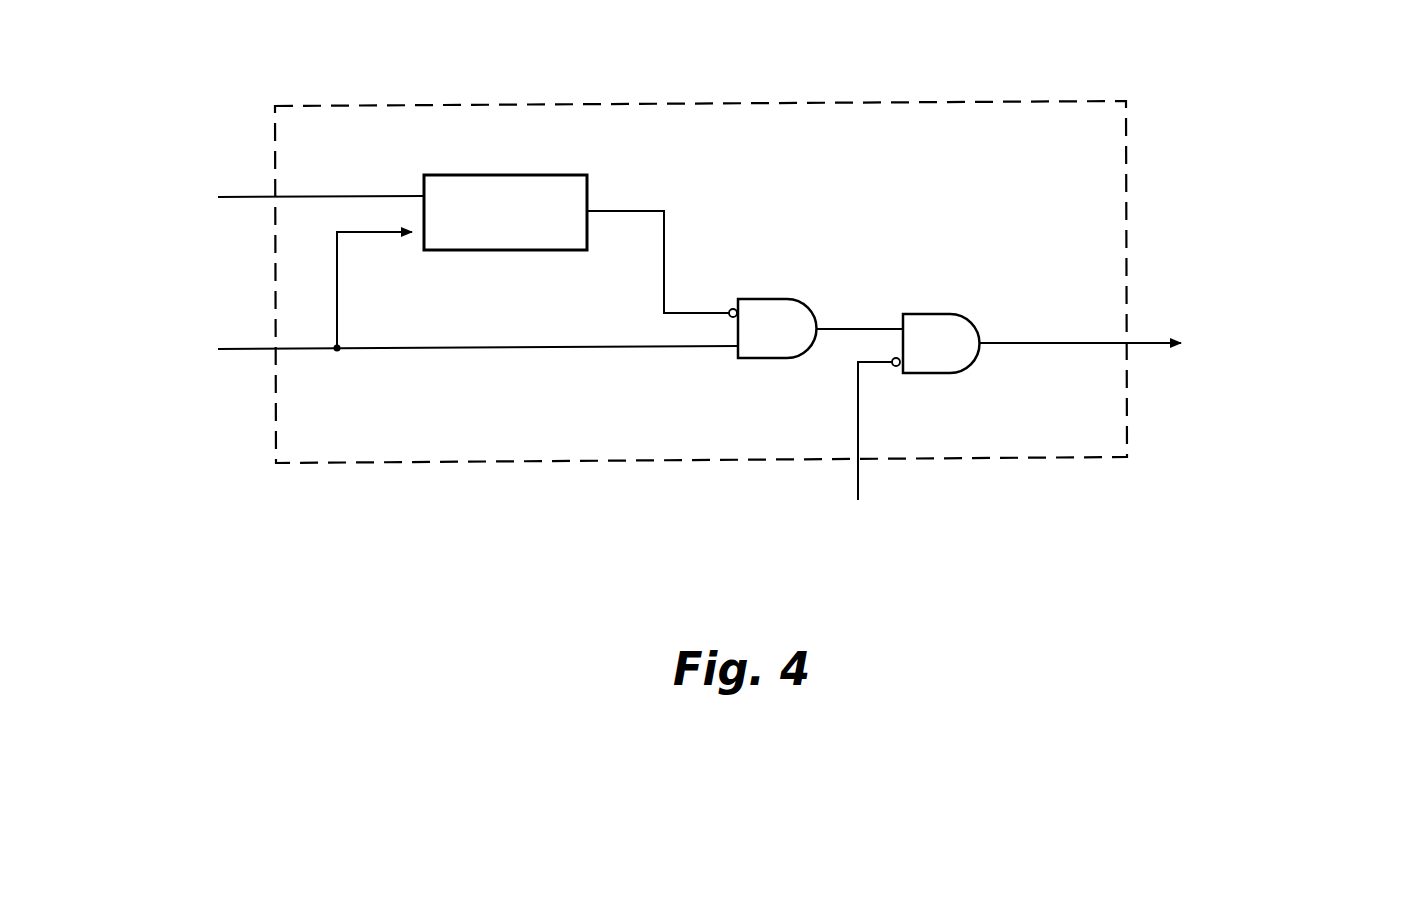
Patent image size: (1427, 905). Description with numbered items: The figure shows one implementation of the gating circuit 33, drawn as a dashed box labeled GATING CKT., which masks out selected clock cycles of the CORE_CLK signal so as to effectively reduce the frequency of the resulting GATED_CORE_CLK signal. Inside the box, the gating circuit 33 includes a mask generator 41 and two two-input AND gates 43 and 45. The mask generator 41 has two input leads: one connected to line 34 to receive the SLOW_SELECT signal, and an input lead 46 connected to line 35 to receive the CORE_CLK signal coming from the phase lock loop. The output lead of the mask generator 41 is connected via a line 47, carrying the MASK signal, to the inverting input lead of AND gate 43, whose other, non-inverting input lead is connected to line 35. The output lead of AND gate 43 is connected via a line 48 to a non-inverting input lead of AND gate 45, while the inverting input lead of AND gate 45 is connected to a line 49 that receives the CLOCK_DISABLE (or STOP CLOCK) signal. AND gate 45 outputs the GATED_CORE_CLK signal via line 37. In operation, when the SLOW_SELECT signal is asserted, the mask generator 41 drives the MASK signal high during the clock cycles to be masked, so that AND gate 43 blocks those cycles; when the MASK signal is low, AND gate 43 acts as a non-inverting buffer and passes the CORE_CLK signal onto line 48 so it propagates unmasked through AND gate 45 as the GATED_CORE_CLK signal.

The gating circuit 33 is at (828, 102).
The line 34 is at (230, 197).
The line 35 is at (232, 350).
The line 37 is at (1143, 342).
The mask generator 41 is at (533, 174).
The AND gate 43 is at (782, 299).
The AND gate 45 is at (940, 313).
The input lead 46 is at (370, 235).
The line 47 is at (635, 211).
The line 48 is at (857, 328).
The line 49 is at (858, 468).